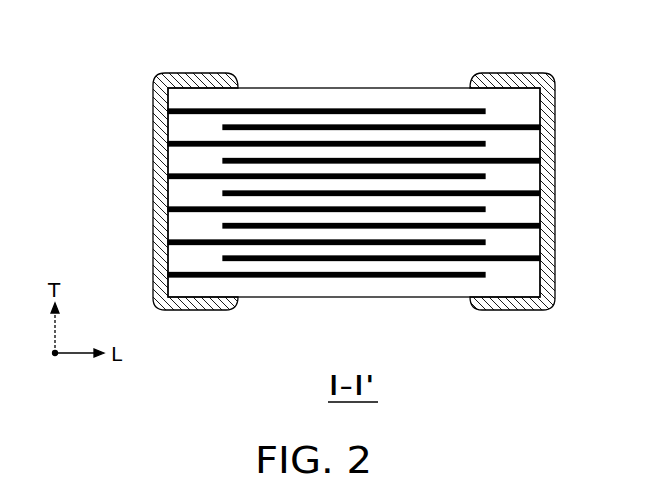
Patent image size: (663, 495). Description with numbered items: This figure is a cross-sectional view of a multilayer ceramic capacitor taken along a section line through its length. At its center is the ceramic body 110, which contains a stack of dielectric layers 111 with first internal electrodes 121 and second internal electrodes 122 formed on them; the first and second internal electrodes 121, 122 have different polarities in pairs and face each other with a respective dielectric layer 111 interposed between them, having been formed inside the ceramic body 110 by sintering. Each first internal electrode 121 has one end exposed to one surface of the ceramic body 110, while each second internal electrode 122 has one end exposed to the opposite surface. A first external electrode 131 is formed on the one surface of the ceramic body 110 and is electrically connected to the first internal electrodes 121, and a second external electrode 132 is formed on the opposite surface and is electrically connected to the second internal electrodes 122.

The ceramic body 110 is at (355, 87).
The dielectric layer 111 is at (191, 129).
The first internal electrode 121 is at (190, 113).
The second internal electrode 122 is at (226, 161).
The first external electrode 131 is at (195, 72).
The second external electrode 132 is at (513, 72).